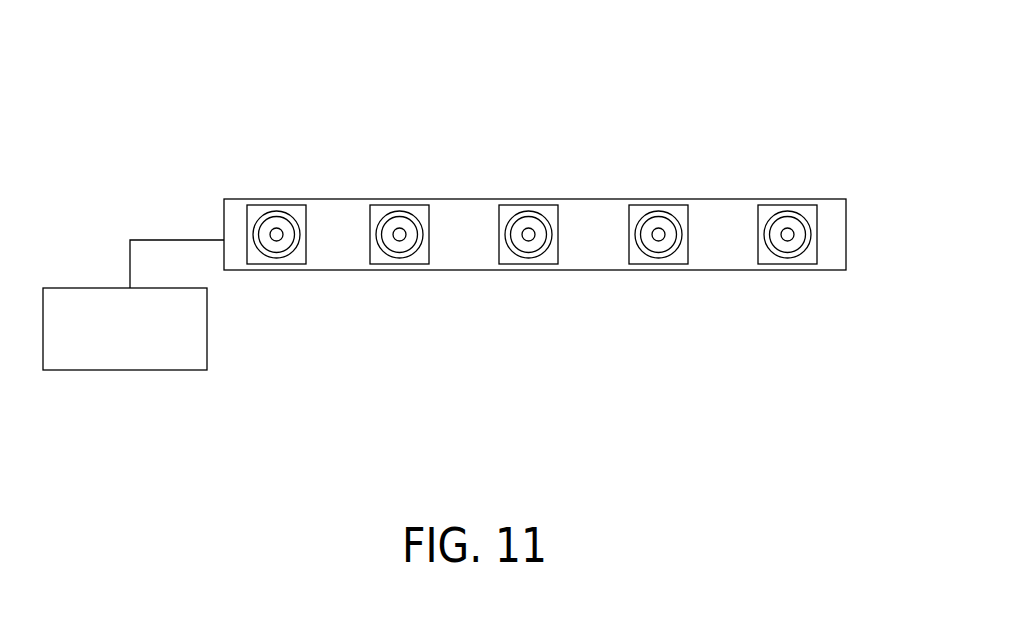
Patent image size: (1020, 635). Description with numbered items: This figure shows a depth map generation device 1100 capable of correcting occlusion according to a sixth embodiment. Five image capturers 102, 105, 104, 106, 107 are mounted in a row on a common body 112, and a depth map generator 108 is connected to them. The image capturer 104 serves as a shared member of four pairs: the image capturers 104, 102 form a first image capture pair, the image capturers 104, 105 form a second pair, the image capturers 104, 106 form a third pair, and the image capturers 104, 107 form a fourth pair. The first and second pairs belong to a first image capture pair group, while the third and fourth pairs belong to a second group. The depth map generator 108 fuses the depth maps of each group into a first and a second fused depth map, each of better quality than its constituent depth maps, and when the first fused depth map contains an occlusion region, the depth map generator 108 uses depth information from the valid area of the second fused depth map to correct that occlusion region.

The depth map generation device 1100 is at (763, 83).
The housing / frame 112 is at (847, 239).
The image capturer 102 is at (257, 264).
The image capturer 105 is at (418, 264).
The image capturer 104 is at (547, 264).
The image capturer 106 is at (676, 264).
The image capturer 107 is at (808, 264).
The depth map generator 108 is at (127, 370).